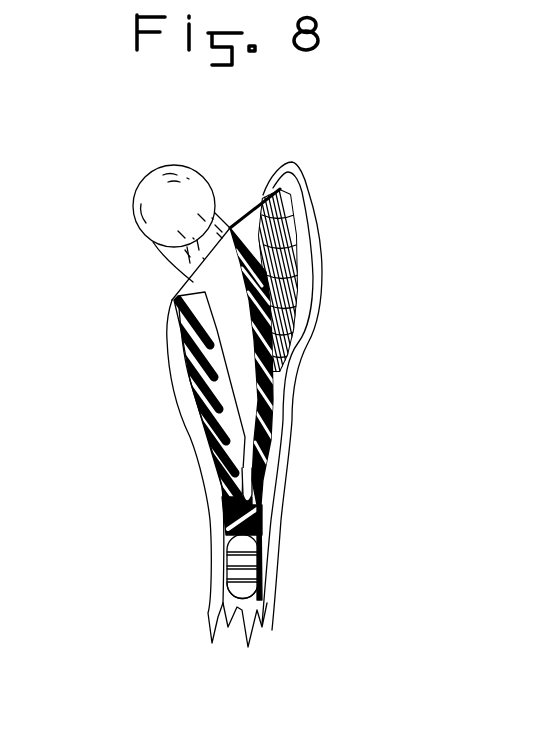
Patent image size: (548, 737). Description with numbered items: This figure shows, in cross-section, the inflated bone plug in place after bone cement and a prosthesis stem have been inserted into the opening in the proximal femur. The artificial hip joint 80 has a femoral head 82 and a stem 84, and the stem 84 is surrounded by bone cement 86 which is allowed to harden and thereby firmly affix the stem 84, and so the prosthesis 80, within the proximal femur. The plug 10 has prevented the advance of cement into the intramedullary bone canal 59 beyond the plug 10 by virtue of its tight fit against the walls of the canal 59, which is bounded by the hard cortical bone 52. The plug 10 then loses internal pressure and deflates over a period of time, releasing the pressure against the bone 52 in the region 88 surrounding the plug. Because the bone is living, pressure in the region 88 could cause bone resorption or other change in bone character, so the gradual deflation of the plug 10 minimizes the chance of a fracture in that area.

The artificial hip joint 80 is at (198, 157).
The femoral head 82 is at (152, 195).
The stem 84 is at (230, 228).
The bone cement 86 is at (182, 295).
The cortical bone 52 is at (194, 410).
The plug 10 is at (192, 555).
The intramedullary bone canal 59 is at (240, 603).
The region 88 is at (277, 538).